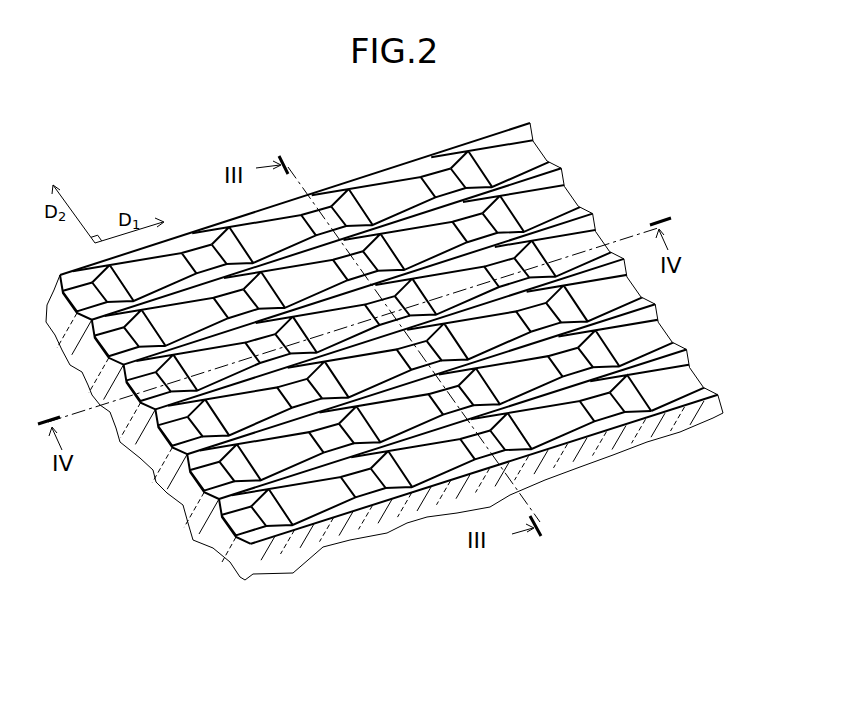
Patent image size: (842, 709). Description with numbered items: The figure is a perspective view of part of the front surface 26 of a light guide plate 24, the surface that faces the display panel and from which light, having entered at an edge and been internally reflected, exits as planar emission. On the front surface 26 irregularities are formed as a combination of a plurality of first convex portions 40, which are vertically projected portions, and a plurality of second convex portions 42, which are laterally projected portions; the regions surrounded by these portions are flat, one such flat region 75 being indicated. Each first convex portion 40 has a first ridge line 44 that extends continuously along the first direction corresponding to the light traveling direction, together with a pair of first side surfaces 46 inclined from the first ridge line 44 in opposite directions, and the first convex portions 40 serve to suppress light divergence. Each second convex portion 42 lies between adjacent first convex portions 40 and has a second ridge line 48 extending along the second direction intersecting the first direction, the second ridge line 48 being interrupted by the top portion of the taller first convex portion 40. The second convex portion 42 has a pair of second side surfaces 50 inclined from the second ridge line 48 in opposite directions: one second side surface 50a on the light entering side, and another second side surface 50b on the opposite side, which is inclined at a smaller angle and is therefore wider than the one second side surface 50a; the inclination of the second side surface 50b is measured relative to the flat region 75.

The light guide plate 24 is at (184, 507).
The front surface 26 is at (391, 162).
The first convex portion 40 is at (346, 517).
The second convex portion 42 is at (676, 474).
The first ridge line 44 is at (345, 430).
The first side surfaces 46 is at (310, 428).
The second ridge line 48 is at (627, 413).
The second side surfaces 50 is at (676, 454).
The one second side surface 50a is at (641, 408).
The another second side surface 50b is at (706, 435).
The flat region 75 is at (480, 220).